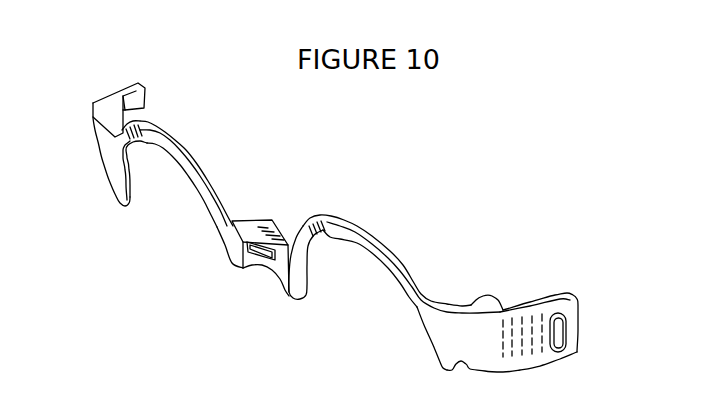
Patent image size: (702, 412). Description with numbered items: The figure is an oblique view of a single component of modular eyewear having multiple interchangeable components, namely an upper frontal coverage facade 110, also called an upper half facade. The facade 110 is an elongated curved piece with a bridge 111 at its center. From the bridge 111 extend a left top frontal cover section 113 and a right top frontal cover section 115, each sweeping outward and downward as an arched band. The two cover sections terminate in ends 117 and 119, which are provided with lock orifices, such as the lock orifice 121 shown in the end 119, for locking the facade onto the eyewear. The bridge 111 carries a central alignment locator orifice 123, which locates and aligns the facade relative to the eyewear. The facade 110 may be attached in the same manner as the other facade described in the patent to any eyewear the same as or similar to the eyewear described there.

The upper frontal coverage facade 110 is at (383, 187).
The bridge 111 is at (270, 222).
The left top frontal cover section 113 is at (157, 140).
The right top frontal cover section 115 is at (390, 257).
The end 117 is at (107, 110).
The end 119 is at (513, 311).
The lock orifice 121 is at (565, 338).
The central alignment locator orifice 123 is at (263, 255).